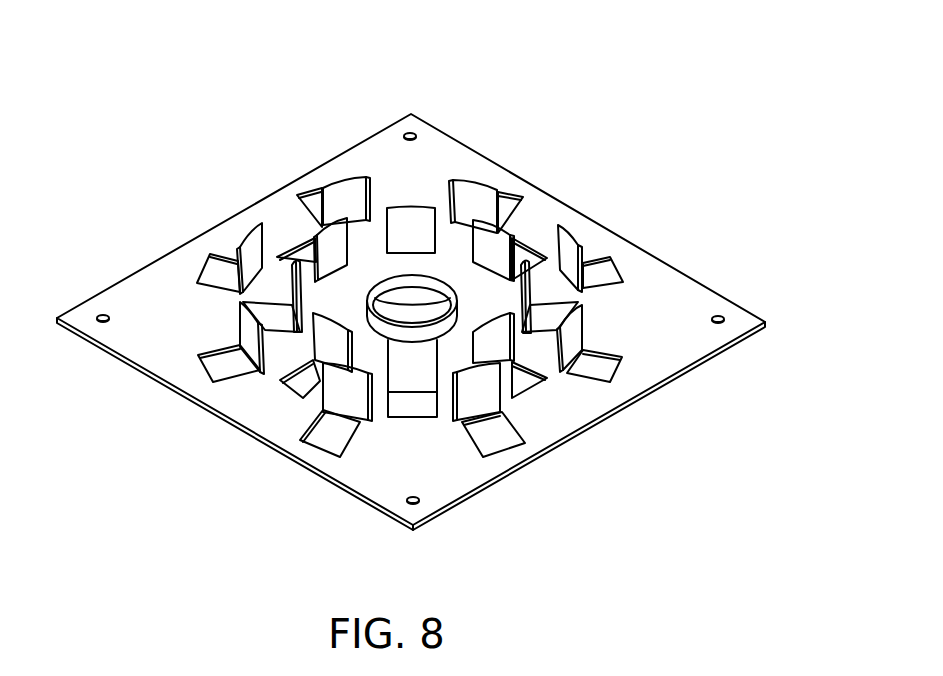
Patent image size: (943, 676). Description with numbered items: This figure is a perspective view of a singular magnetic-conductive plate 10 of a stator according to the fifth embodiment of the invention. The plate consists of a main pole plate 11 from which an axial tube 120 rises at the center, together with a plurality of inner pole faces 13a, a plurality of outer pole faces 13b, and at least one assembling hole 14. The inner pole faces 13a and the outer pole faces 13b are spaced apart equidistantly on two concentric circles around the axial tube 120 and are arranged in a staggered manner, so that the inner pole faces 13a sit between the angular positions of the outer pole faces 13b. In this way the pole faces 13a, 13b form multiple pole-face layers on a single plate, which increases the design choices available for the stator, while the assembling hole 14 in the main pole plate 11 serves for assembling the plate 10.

The singular magnetic-conductive plate 10 is at (653, 193).
The main pole plate 11 is at (377, 268).
The axial tube 120 is at (372, 281).
The inner pole faces 13a is at (503, 232).
The outer pole faces 13b is at (456, 180).
The assembling hole 14 is at (723, 316).